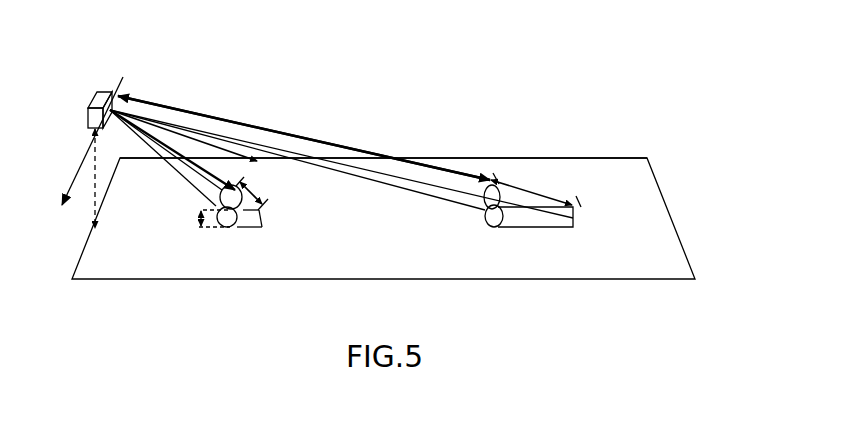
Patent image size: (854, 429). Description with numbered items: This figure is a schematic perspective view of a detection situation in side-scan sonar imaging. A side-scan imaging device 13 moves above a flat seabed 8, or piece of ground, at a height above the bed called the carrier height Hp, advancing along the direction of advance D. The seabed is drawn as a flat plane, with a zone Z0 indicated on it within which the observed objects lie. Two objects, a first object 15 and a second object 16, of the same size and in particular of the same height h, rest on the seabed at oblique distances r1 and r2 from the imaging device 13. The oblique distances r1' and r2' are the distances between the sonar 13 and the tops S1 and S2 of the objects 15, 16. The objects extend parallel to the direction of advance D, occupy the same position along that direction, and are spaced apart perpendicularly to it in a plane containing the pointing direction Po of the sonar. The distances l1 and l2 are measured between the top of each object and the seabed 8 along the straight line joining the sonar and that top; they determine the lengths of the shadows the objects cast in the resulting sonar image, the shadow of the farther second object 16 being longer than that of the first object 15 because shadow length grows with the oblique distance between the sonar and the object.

The flat seabed 8 is at (668, 263).
The side-scan imaging device 13 is at (90, 118).
The first object 15 is at (220, 221).
The second object 16 is at (488, 218).
The direction of advance D is at (86, 155).
The carrier height Hp is at (105, 178).
The reference zone Z0 is at (563, 168).
The pointing direction Po is at (207, 143).
The oblique distance to top of second object r2' is at (304, 138).
The oblique distance to top of first object r1' is at (183, 150).
The oblique distance of first object r1 is at (166, 158).
The oblique distance of second object r2 is at (341, 164).
The top of first object S1 is at (232, 200).
The top of second object S2 is at (492, 200).
The first shadow distance l1 is at (252, 193).
The second shadow distance l2 is at (536, 190).
The first height h is at (205, 215).